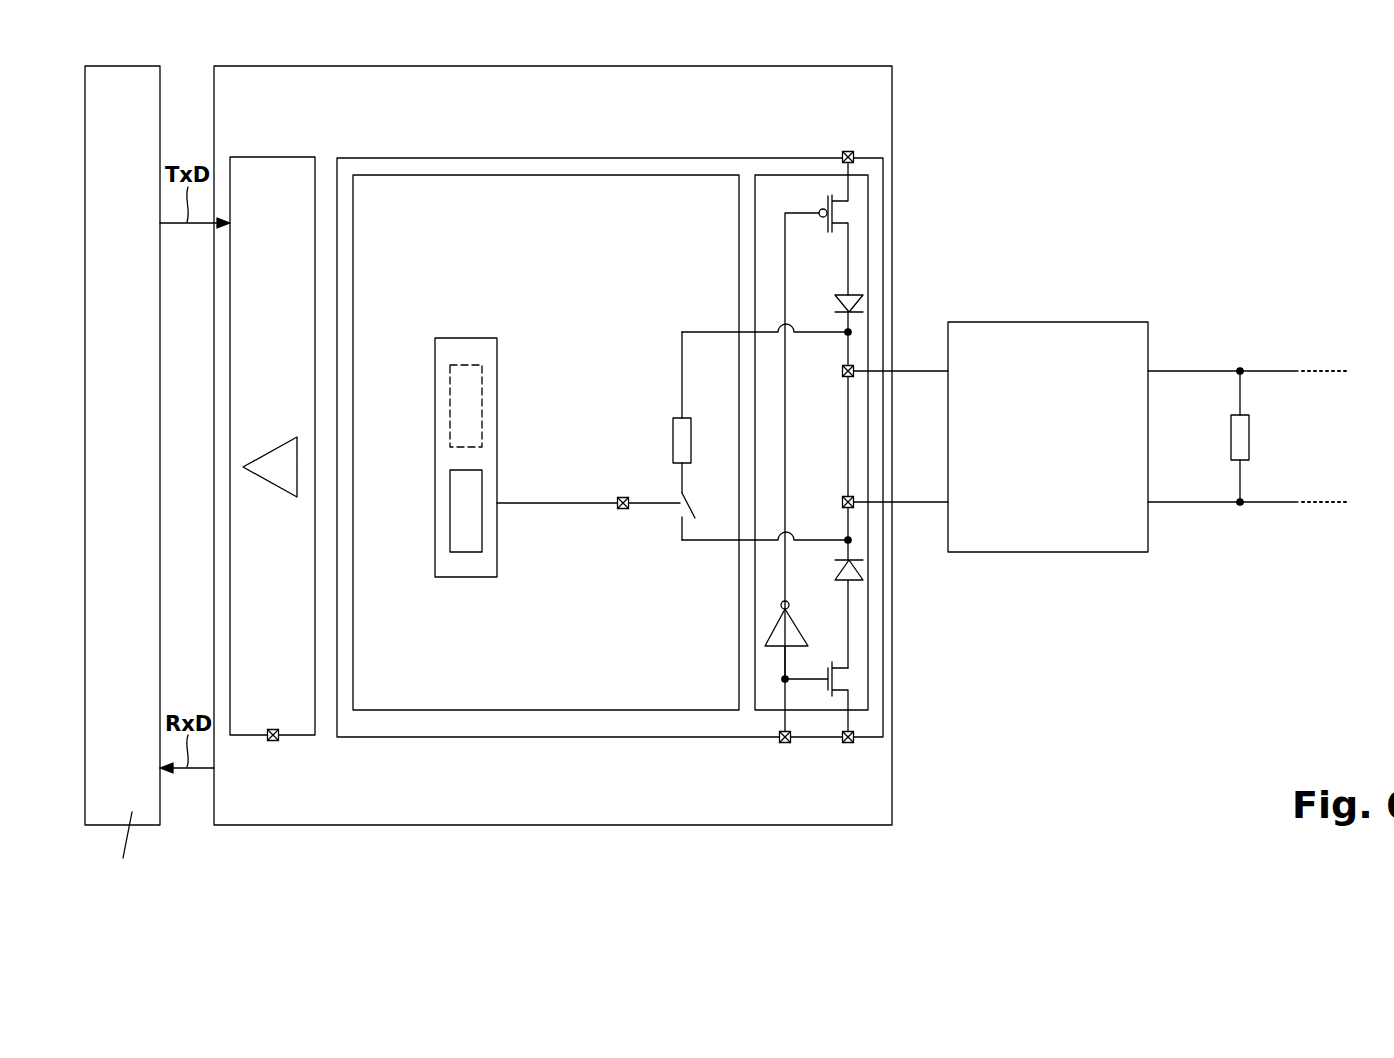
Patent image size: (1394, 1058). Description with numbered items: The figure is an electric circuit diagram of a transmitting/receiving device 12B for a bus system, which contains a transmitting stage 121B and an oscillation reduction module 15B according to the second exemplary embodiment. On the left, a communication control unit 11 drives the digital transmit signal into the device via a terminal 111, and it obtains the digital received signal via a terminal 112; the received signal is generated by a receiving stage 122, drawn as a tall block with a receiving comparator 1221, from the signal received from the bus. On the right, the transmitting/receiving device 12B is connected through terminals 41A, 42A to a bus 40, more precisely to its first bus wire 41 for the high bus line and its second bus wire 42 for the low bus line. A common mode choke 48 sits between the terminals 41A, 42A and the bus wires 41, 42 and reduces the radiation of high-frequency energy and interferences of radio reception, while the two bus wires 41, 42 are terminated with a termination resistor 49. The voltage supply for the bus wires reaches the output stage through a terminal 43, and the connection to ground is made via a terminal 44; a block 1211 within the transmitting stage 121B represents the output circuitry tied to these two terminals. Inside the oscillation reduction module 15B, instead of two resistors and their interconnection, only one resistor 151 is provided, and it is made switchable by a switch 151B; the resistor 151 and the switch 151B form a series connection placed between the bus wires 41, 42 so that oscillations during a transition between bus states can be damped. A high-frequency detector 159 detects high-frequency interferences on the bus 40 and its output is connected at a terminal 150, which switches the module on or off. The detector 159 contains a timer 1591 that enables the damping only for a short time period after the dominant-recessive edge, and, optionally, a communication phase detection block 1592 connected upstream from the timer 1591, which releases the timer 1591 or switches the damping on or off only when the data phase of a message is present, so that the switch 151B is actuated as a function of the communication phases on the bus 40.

The communication control unit 11 is at (122, 66).
The transmitting/receiving device 12B is at (353, 66).
The receiving stage 122 is at (271, 157).
The receiving comparator 1221 is at (268, 448).
The terminal 112 is at (273, 742).
The transmitting stage 121B is at (476, 158).
The oscillation reduction module 15B is at (686, 175).
The transmitter output stage 1211 is at (794, 175).
The high-frequency detector 159 is at (428, 430).
The timer 1591 is at (450, 510).
The communication phase detection block 1592 is at (450, 397).
The terminal 150 is at (623, 510).
The resistor 151 is at (673, 439).
The switch 151B is at (682, 493).
The terminal 43 is at (848, 152).
The terminal 44 is at (849, 745).
The terminal 111 is at (786, 745).
The terminal 41A is at (916, 371).
The terminal 42A is at (917, 506).
The common mode choke 48 is at (1048, 553).
The first bus wire 41 is at (1266, 367).
The second bus wire 42 is at (1268, 506).
The termination resistor 49 is at (1249, 437).
The bus 40 is at (1342, 320).